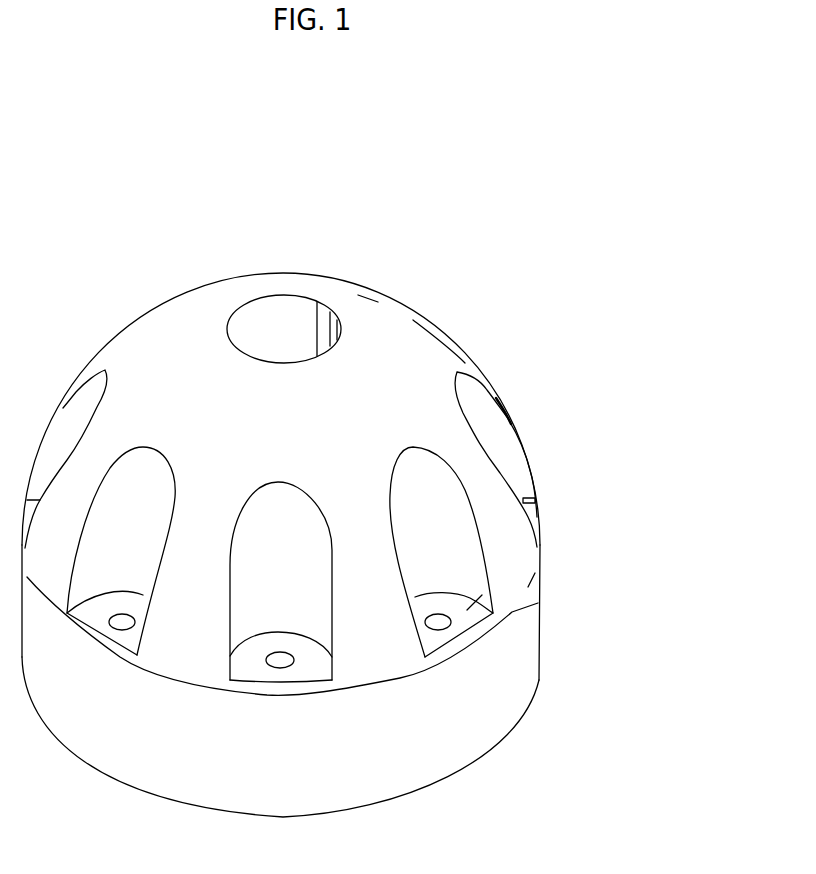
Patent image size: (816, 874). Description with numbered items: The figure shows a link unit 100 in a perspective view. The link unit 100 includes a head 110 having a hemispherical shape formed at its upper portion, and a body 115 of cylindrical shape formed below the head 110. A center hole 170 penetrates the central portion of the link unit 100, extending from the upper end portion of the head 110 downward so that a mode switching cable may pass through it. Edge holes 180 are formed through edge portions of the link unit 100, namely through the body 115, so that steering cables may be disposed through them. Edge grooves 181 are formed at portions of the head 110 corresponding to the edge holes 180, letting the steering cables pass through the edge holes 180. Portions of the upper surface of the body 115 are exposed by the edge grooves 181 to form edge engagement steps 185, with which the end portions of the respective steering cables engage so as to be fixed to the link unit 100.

The link unit 100 is at (232, 113).
The head 110 is at (400, 339).
The body 115 is at (157, 750).
The center hole 170 is at (283, 328).
The edge holes 180 is at (430, 622).
The edge grooves 181 is at (447, 538).
The edge engagement steps 185 is at (485, 592).